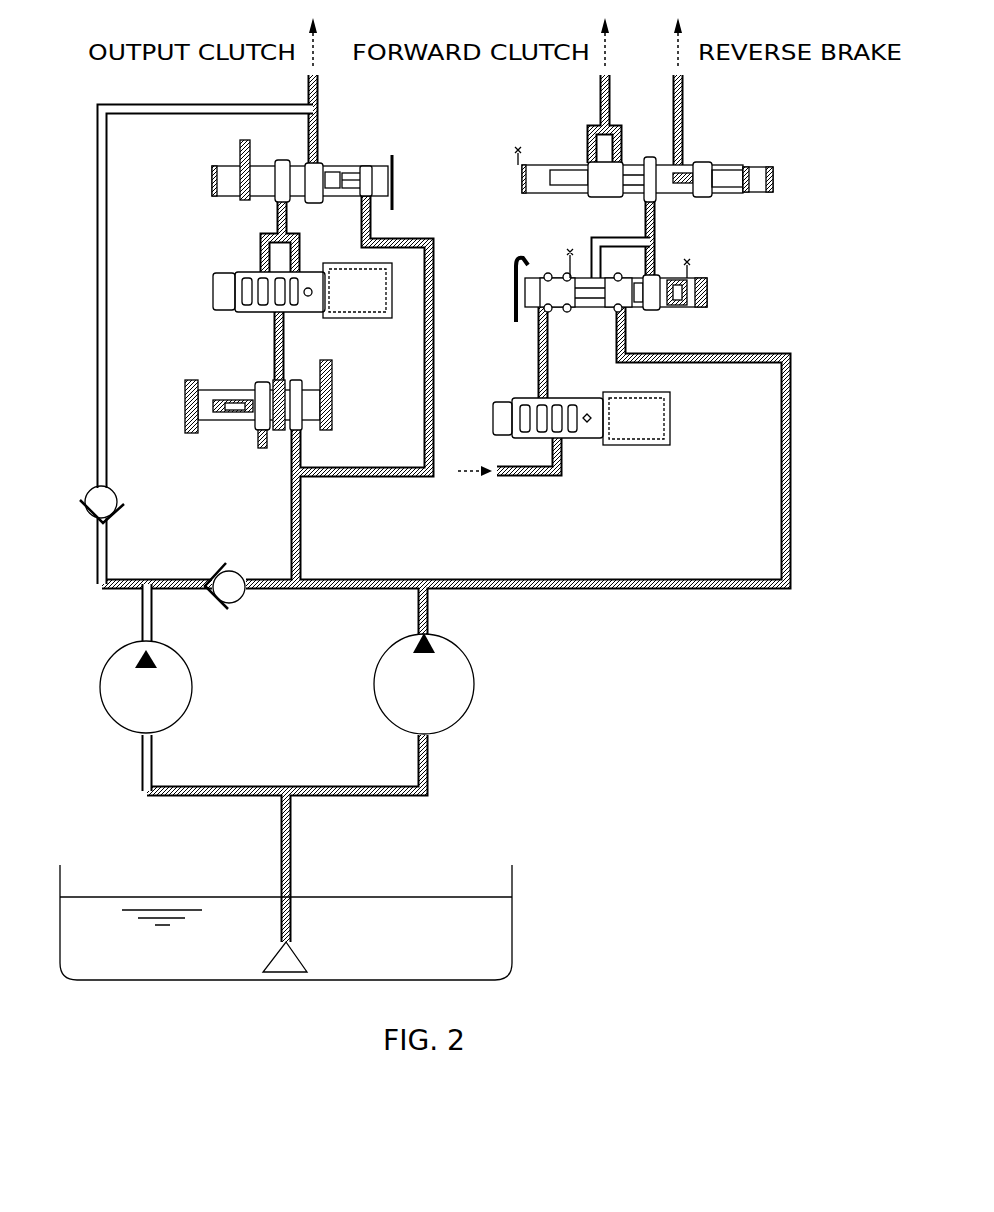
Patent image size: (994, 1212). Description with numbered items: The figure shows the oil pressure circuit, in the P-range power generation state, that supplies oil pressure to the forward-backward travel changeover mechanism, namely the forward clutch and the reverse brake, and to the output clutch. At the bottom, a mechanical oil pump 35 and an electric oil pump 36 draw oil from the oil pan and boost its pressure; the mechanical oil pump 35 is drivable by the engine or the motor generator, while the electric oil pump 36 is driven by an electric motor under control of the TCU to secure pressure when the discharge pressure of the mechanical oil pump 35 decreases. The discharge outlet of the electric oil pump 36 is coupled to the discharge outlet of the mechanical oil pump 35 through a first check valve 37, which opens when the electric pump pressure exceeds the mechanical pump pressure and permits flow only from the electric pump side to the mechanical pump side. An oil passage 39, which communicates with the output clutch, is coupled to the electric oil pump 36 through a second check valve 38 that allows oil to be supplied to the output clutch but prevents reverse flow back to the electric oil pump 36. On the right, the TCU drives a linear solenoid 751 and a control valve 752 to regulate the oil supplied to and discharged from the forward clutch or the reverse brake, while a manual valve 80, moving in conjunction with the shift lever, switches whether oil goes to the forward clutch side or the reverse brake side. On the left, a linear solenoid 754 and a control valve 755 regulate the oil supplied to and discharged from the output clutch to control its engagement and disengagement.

The mechanical oil pump 35 is at (473, 680).
The electric oil pump 36 is at (185, 686).
The first check valve 37 is at (237, 567).
The second check valve 38 is at (113, 486).
The oil passage 39 is at (97, 290).
The manual valve 80 is at (713, 158).
The linear solenoid 751 is at (676, 418).
The control valve 752 is at (713, 279).
The linear solenoid 754 is at (360, 320).
The control valve 755 is at (395, 183).